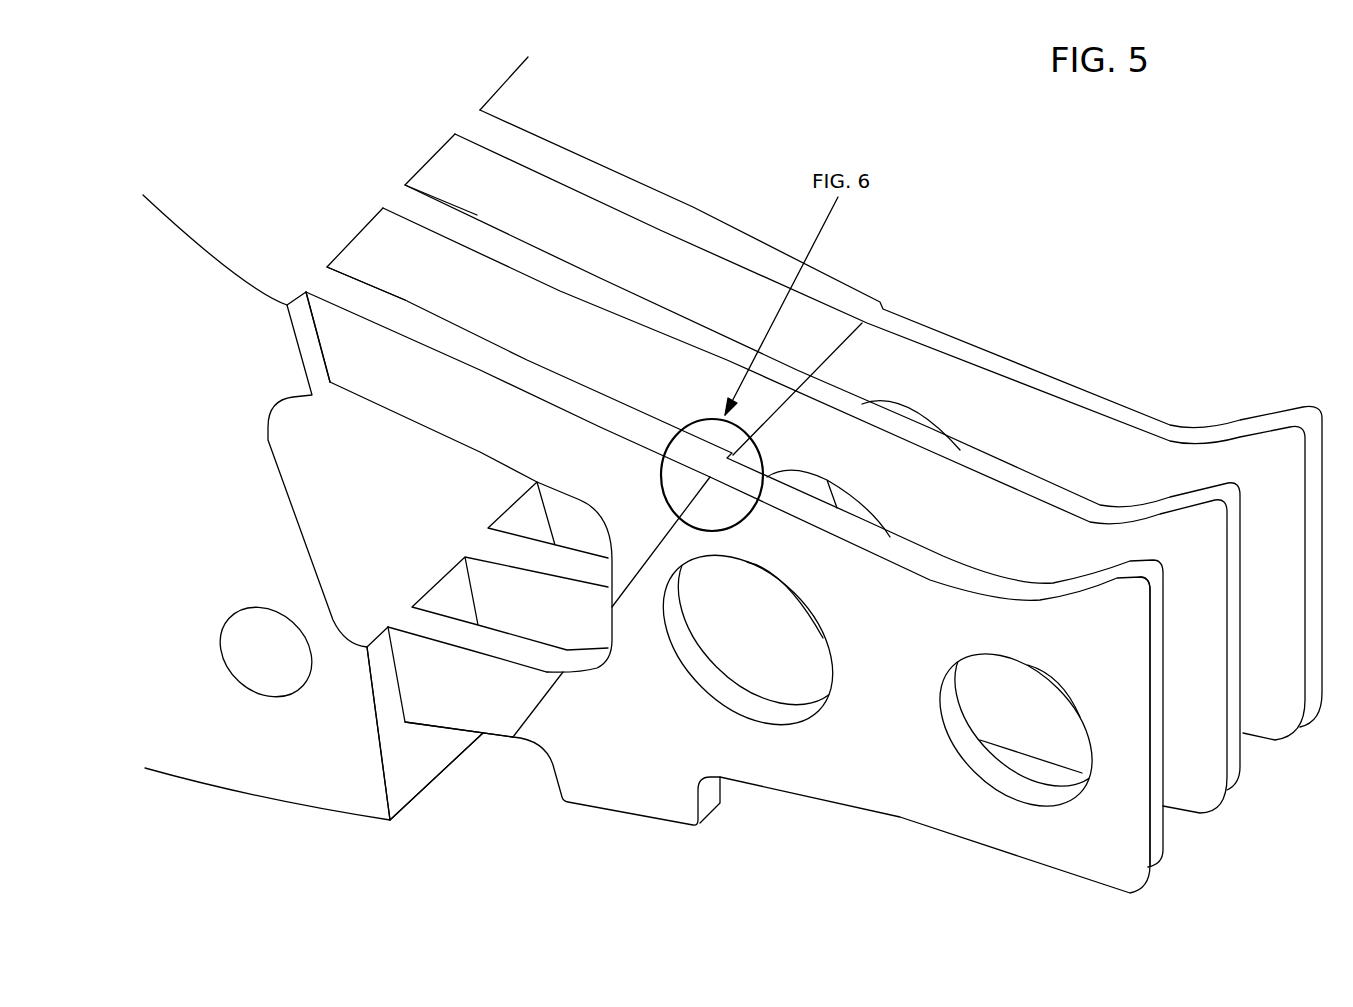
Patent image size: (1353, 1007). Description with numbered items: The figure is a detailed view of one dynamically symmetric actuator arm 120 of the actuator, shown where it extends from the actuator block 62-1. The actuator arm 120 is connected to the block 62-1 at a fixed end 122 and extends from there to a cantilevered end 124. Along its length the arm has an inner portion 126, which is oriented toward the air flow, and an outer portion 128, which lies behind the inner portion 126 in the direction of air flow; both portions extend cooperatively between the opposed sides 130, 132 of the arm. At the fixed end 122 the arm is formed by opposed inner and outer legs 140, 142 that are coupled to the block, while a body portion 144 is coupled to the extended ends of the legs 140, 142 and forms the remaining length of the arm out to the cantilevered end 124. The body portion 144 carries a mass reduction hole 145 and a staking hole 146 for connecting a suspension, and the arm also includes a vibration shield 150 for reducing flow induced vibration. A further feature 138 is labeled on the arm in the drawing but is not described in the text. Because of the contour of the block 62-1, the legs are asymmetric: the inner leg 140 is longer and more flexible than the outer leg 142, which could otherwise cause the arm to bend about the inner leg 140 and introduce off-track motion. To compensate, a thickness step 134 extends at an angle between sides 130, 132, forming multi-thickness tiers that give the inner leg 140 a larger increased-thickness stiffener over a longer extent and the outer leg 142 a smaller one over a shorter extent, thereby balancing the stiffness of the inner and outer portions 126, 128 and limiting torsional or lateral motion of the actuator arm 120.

The actuator block 62-1 is at (280, 250).
The actuator arm 120 is at (821, 476).
The fixed end 122 is at (330, 342).
The cantilevered end 124 is at (1157, 623).
The inner portion 126 is at (632, 479).
The outer portion 128 is at (623, 739).
The side 130 is at (963, 573).
The side 132 is at (885, 815).
The thickness step 134 is at (655, 545).
The top face 138 is at (1043, 573).
The inner leg 140 is at (468, 395).
The outer leg 142 is at (443, 720).
The body portion 144 is at (900, 751).
The mass reduction hole 145 is at (742, 718).
The staking hole 146 is at (1007, 800).
The vibration shield 150 is at (1143, 622).